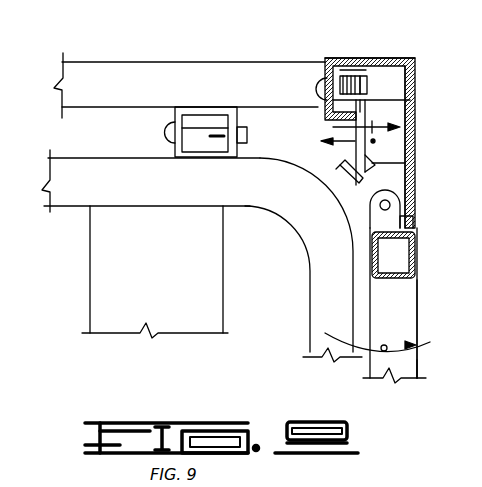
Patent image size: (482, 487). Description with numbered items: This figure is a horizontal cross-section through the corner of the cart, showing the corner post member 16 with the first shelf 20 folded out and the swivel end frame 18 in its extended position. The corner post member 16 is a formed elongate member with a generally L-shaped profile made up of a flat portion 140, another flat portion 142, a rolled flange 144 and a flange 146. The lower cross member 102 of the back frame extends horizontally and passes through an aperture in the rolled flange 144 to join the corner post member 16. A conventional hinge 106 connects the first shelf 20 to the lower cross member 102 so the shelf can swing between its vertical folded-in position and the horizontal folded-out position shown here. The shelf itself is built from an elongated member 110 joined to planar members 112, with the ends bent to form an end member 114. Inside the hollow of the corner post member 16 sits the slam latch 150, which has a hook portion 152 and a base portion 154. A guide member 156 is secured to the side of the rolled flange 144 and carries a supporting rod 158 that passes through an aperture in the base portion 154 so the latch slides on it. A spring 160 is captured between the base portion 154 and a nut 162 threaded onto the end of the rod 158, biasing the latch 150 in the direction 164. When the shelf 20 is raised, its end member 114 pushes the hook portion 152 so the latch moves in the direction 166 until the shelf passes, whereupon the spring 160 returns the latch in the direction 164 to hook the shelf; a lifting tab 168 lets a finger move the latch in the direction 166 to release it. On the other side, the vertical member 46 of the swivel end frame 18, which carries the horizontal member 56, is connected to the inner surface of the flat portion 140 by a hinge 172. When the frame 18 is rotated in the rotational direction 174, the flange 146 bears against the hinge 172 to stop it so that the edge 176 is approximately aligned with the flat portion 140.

The corner post member 16 is at (352, 42).
The swivel end frame 18 is at (428, 328).
The first shelf 20 is at (303, 341).
The vertical member 46 is at (415, 258).
The horizontal member 56 is at (410, 364).
The lower cross member 102 is at (140, 72).
The hinge 106 is at (165, 140).
The elongated member 110 is at (92, 160).
The planar member 112 is at (166, 296).
The end member 114 is at (310, 296).
The flat portion 140 is at (413, 152).
The flat portion 142 is at (375, 60).
The rolled flange 144 is at (322, 62).
The flange 146 is at (408, 215).
The slam latch 150 is at (353, 149).
The hook portion 152 is at (353, 181).
The base portion 154 is at (333, 101).
The guide member 156 is at (318, 82).
The supporting rod 158 is at (350, 86).
The spring 160 is at (346, 75).
The nut 162 is at (367, 86).
The direction 164 is at (374, 141).
The direction 166 is at (373, 124).
The lifting tab 168 is at (413, 164).
The hinge 172 is at (400, 200).
The rotational direction 174 is at (386, 345).
The edge 176 is at (418, 300).